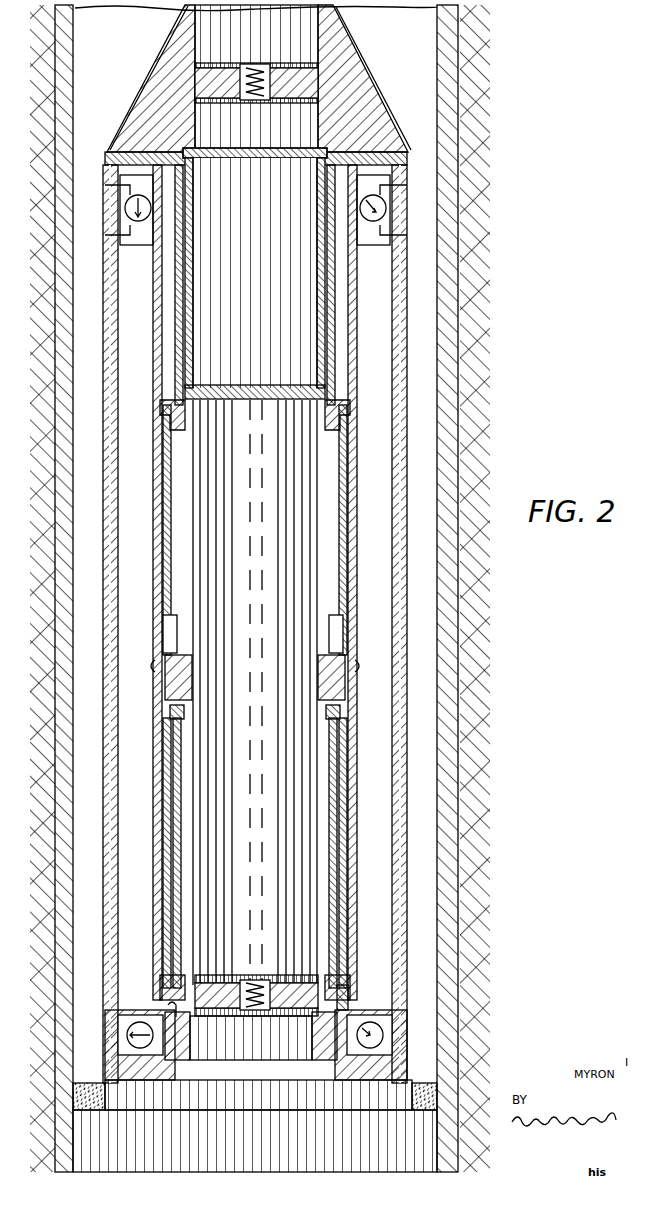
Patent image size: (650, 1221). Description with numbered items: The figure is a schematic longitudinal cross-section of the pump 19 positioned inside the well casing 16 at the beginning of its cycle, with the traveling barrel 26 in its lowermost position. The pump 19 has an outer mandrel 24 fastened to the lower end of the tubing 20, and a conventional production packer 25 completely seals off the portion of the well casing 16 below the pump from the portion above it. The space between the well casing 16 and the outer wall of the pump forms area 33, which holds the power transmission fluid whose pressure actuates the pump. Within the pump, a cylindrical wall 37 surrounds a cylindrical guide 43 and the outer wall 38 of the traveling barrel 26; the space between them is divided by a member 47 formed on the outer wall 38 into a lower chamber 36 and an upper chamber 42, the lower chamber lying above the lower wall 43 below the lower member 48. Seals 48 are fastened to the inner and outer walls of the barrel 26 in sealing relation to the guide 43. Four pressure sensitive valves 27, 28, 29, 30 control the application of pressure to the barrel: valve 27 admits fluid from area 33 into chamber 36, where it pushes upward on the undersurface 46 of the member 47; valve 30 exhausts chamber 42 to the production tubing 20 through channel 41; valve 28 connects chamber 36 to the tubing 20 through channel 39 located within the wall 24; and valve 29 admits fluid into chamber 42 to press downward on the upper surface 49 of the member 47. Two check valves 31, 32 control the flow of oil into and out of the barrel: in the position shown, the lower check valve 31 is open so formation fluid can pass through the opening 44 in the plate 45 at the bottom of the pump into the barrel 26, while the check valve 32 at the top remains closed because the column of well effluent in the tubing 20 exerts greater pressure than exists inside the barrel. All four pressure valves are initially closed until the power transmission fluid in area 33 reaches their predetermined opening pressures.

The well casing 16 is at (440, 696).
The pump 19 is at (420, 656).
The tubing 20 is at (327, 8).
The outer mandrel 24 is at (104, 810).
The production packer 25 is at (416, 1110).
The traveling barrel 26 is at (277, 644).
The pressure sensitive valve 27 is at (366, 1022).
The pressure sensitive valve 28 is at (143, 1048).
The pressure sensitive valve 29 is at (135, 225).
The pressure sensitive valve 30 is at (376, 225).
The check valve 31 is at (256, 980).
The check valve 32 is at (256, 100).
The area 33 is at (118, 60).
The chamber 36 is at (340, 985).
The wall 37 is at (153, 386).
The outer wall 38 is at (343, 596).
The channel 39 is at (112, 874).
The channel 41 is at (372, 106).
The upper chamber 42 is at (175, 312).
The cylindrical guide 43 is at (183, 350).
The opening 44 is at (300, 1016).
The plate 45 is at (181, 1012).
The undersurface 46 is at (164, 712).
The member 47 is at (190, 693).
The seals 48 is at (185, 394).
The upper surface 49 is at (155, 666).